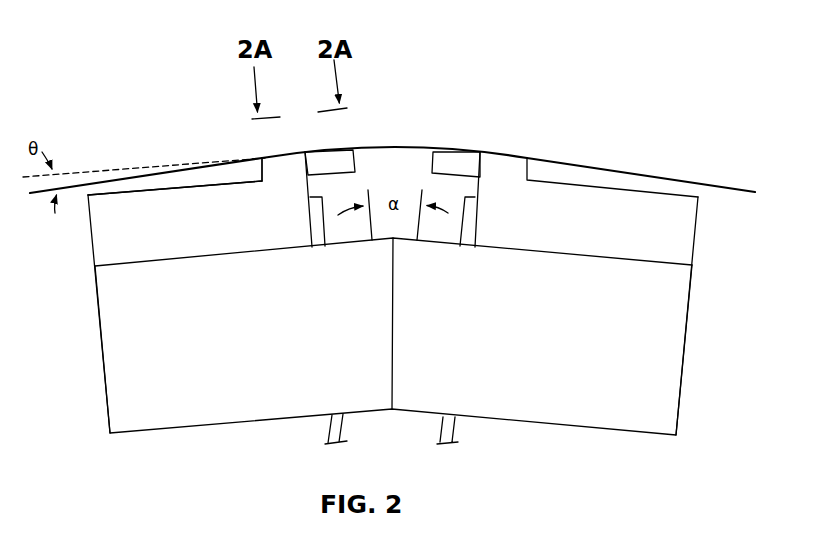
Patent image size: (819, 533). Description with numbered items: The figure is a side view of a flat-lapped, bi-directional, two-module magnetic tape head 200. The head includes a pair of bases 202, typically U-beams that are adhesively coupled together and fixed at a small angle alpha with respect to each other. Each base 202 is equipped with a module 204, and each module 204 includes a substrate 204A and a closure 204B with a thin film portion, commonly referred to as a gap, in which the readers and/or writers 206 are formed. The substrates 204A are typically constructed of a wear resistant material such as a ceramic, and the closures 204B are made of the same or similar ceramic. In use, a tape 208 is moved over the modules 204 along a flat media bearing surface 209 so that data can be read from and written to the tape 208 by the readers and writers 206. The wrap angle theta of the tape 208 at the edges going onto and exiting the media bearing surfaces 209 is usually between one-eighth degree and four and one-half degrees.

The magnetic tape head 200 is at (139, 114).
The base 202 is at (100, 328).
The module 204 is at (88, 238).
The substrate 204A is at (148, 215).
The closure 204B is at (433, 168).
The readers and/or writers 206 is at (310, 143).
The tape 208 is at (615, 170).
The media bearing surface 209 is at (262, 148).